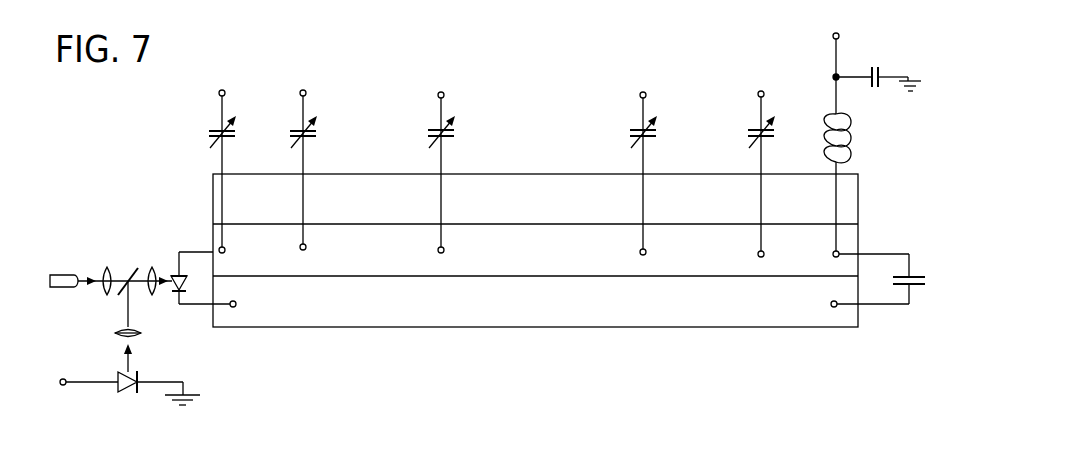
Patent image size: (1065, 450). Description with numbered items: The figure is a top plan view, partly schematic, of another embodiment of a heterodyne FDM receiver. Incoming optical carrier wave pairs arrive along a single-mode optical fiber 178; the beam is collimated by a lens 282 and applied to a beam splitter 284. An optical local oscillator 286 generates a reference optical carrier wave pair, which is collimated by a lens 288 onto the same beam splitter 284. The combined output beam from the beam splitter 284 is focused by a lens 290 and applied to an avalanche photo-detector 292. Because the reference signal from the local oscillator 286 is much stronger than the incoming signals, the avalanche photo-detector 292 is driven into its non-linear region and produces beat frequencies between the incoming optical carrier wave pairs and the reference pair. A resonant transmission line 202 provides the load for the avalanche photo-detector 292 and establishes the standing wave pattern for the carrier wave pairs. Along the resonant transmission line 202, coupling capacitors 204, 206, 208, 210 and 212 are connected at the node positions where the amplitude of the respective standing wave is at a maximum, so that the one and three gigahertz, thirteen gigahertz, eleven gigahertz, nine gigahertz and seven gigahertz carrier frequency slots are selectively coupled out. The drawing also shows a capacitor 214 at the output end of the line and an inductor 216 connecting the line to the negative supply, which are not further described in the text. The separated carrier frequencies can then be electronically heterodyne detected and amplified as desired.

The single-mode optical fiber 178 is at (65, 273).
The resonant transmission line 202 is at (443, 348).
The coupling capacitor 204 is at (231, 134).
The coupling capacitor 206 is at (312, 134).
The coupling capacitor 208 is at (450, 134).
The coupling capacitor 210 is at (652, 134).
The coupling capacitor 212 is at (770, 134).
The output coupling capacitor 214 is at (913, 288).
The bias inductor 216 is at (851, 134).
The lens 282 is at (109, 264).
The beam splitter 284 is at (135, 266).
The optical local oscillator 286 is at (121, 393).
The lens 288 is at (113, 331).
The lens 290 is at (155, 294).
The avalanche photo-detector 292 is at (189, 286).